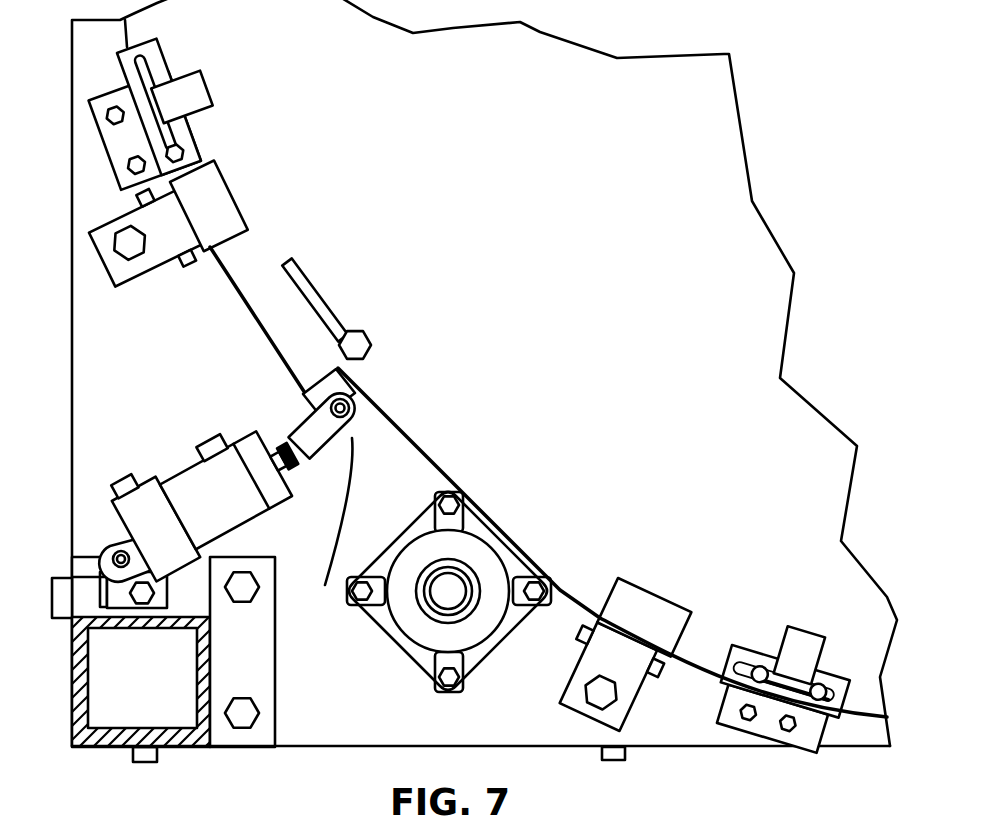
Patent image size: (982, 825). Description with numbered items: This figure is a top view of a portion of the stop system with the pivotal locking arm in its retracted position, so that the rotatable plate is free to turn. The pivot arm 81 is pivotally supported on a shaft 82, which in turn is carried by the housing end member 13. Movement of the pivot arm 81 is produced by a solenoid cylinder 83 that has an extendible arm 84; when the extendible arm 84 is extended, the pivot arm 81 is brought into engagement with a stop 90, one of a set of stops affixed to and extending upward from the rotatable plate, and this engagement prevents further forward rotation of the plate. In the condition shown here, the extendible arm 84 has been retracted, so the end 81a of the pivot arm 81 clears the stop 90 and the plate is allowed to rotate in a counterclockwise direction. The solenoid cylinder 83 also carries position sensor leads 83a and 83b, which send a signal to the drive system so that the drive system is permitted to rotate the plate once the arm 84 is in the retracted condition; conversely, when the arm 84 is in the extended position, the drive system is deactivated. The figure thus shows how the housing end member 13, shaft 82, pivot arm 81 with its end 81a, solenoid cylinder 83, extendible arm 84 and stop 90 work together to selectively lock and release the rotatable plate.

The housing end member 13 is at (305, 725).
The pivot arm 81 is at (412, 472).
The end of pivot arm 81a is at (308, 388).
The shaft 82 is at (457, 588).
The solenoid cylinder 83 is at (168, 497).
The position sensor lead 83a is at (140, 476).
The position sensor lead 83b is at (208, 433).
The extendible arm 84 is at (290, 442).
The stop 90 is at (367, 328).